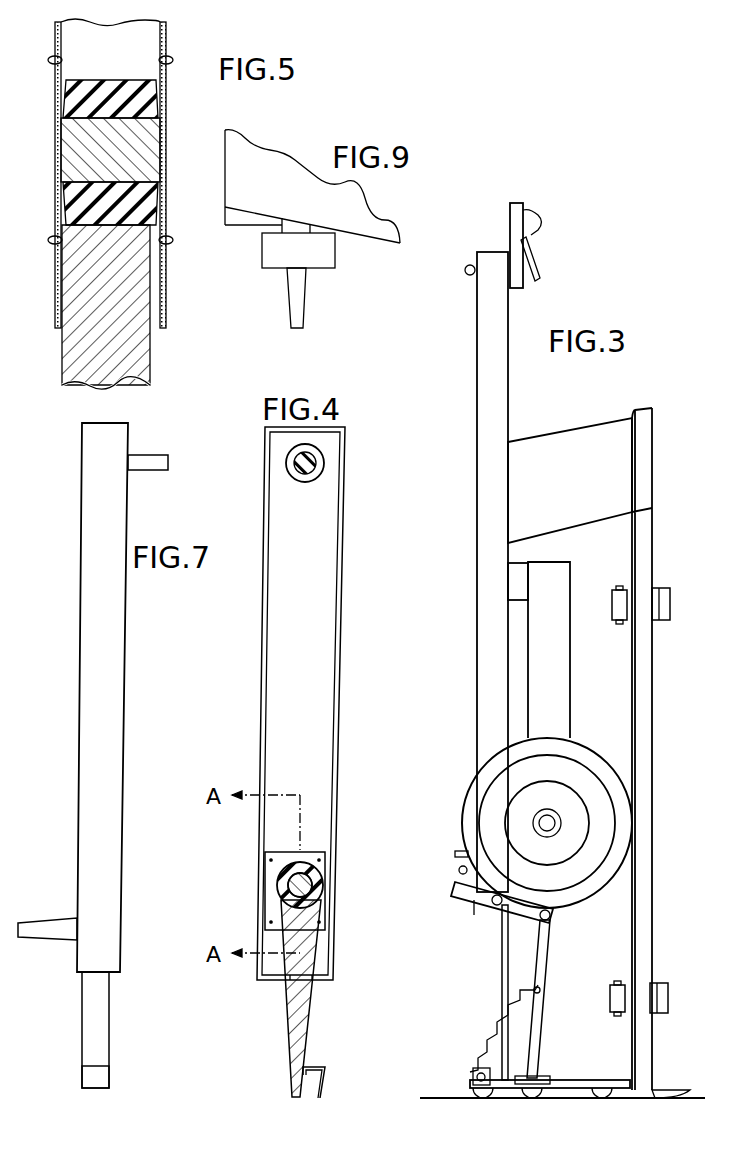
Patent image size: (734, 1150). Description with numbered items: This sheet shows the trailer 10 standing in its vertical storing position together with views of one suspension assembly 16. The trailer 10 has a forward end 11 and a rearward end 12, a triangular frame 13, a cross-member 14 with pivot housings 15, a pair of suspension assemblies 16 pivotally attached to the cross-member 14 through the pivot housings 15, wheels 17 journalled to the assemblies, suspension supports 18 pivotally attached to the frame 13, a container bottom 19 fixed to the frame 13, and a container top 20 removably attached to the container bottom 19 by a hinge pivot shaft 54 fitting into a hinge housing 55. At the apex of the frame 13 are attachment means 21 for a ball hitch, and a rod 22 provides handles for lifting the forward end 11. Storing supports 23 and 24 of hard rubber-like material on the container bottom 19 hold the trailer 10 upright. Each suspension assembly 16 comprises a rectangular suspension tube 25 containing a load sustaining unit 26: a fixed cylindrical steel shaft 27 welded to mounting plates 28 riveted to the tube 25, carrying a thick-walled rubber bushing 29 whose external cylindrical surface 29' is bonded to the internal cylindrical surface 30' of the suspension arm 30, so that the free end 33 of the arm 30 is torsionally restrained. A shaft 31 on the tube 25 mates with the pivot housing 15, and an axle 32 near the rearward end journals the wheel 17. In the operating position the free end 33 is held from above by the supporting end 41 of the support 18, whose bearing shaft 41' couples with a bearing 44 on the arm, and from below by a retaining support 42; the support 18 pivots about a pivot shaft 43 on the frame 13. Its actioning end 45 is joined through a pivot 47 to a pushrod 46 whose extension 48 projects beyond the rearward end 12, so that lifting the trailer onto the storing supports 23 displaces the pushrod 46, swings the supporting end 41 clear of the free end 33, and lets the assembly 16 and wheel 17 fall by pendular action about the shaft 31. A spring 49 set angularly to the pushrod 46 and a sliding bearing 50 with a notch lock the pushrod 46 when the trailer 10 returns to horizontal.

In FIG. 3, the trailer 10 is at (572, 398).
In FIG. 3, the forward end 11 is at (512, 250).
In FIG. 3, the rearward end 12 is at (575, 1080).
In FIG. 3, the triangular frame 13 is at (477, 675).
In FIG. 9, the cross-member 14 is at (242, 222).
In FIG. 3, the cross-member 14 is at (512, 578).
In FIG. 9, the pivot housing 15 is at (288, 230).
In FIG. 3, the suspension assembly 16 is at (550, 678).
In FIG. 4, the suspension assembly 16 is at (338, 675).
In FIG. 7, the suspension assembly 16 is at (122, 628).
In FIG. 3, the wheel 17 is at (476, 795).
In FIG. 3, the suspension support 18 is at (512, 915).
In FIG. 9, the container bottom 19 is at (372, 230).
In FIG. 3, the container bottom 19 is at (640, 710).
In FIG. 3, the container top 20 is at (640, 882).
In FIG. 3, the attachment means 21 is at (538, 218).
In FIG. 3, the rod 22 is at (468, 278).
In FIG. 3, the storing support 23 is at (470, 1088).
In FIG. 3, the storing support 24 is at (671, 1083).
In FIG. 9, the suspension tube 25 is at (325, 252).
In FIG. 4, the suspension tube 25 is at (342, 530).
In FIG. 7, the suspension tube 25 is at (102, 724).
In FIG. 5, the load sustaining unit 26 is at (150, 60).
In FIG. 4, the load sustaining unit 26 is at (278, 933).
In FIG. 5, the cylindrical steel shaft 27 is at (148, 145).
In FIG. 4, the cylindrical steel shaft 27 is at (306, 862).
In FIG. 5, the mounting plate 28 is at (72, 78).
In FIG. 4, the mounting plate 28 is at (325, 866).
In FIG. 5, the bushing 29 is at (135, 218).
In FIG. 4, the bushing 29 is at (291, 857).
In FIG. 5, the external cylindrical surface 29' is at (131, 59).
In FIG. 5, the suspension arm 30 is at (133, 314).
In FIG. 4, the suspension arm 30 is at (318, 998).
In FIG. 7, the suspension arm 30 is at (127, 1024).
In FIG. 5, the internal cylindrical surface 30' is at (165, 254).
In FIG. 4, the shaft 31 is at (308, 478).
In FIG. 7, the shaft 31 is at (145, 465).
In FIG. 9, the axle 32 is at (302, 288).
In FIG. 7, the axle 32 is at (55, 926).
In FIG. 4, the free end 33 is at (292, 1078).
In FIG. 3, the supporting end 41 is at (485, 921).
In FIG. 3, the bearing shaft 41' is at (443, 860).
In FIG. 3, the retaining support 42 is at (450, 852).
In FIG. 3, the pivot shaft 43 is at (495, 908).
In FIG. 4, the bearing 44 is at (328, 1065).
In FIG. 7, the bearing 44 is at (108, 1070).
In FIG. 3, the actioning end 45 is at (555, 920).
In FIG. 3, the pushrod 46 is at (540, 990).
In FIG. 3, the pivot 47 is at (548, 930).
In FIG. 3, the extension 48 is at (555, 1082).
In FIG. 3, the spring 49 is at (497, 1050).
In FIG. 3, the sliding bearing 50 is at (548, 1078).
In FIG. 3, the hinge pivot shaft 54 is at (615, 624).
In FIG. 3, the hinge housing 55 is at (660, 590).